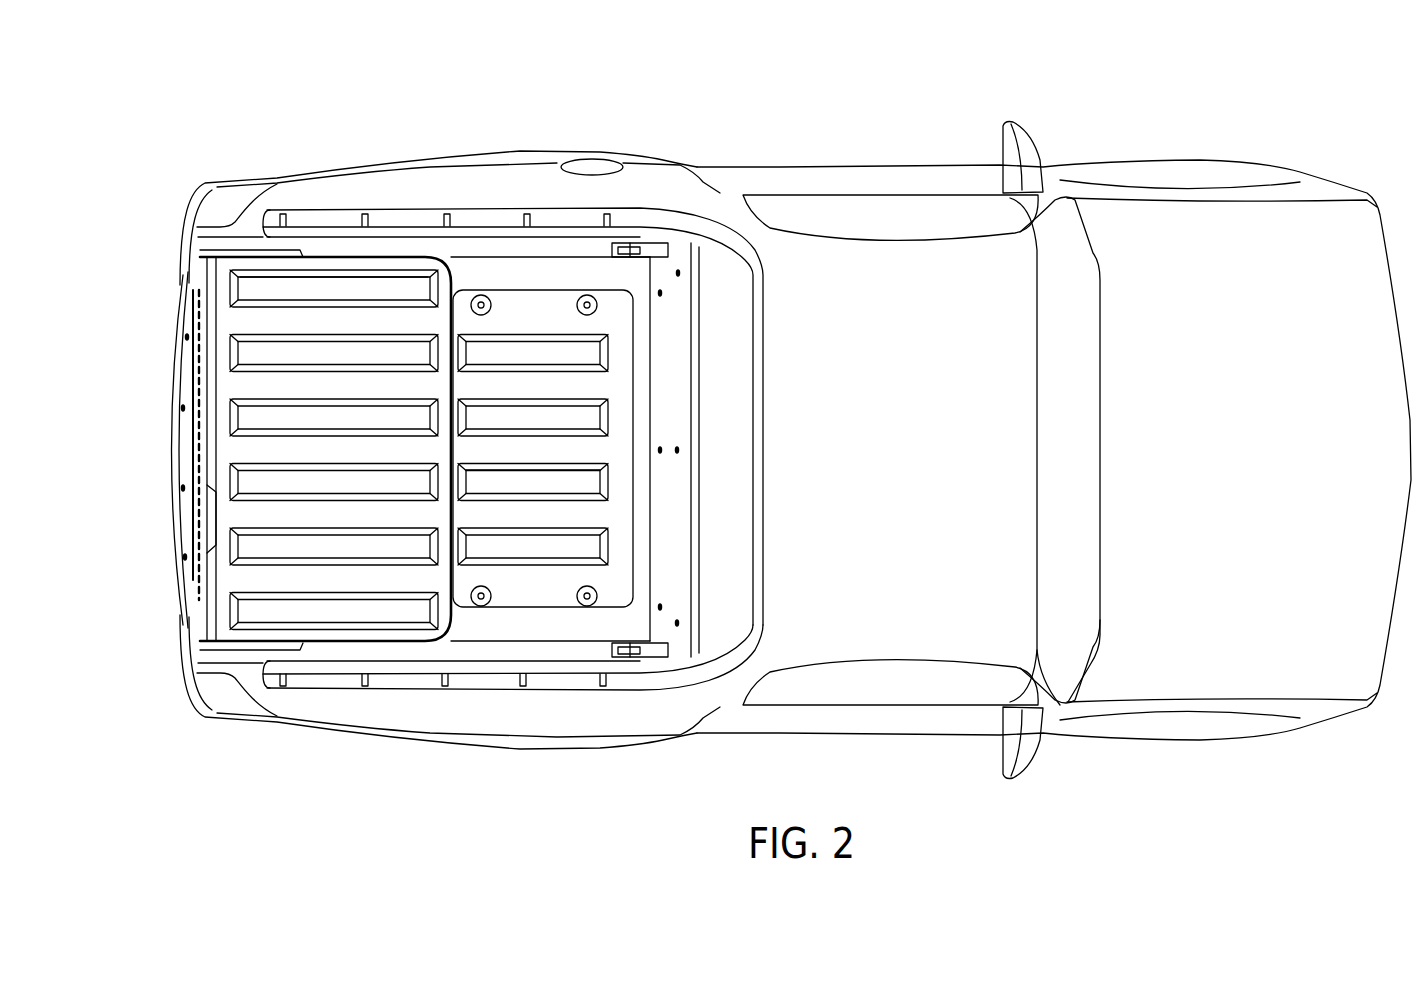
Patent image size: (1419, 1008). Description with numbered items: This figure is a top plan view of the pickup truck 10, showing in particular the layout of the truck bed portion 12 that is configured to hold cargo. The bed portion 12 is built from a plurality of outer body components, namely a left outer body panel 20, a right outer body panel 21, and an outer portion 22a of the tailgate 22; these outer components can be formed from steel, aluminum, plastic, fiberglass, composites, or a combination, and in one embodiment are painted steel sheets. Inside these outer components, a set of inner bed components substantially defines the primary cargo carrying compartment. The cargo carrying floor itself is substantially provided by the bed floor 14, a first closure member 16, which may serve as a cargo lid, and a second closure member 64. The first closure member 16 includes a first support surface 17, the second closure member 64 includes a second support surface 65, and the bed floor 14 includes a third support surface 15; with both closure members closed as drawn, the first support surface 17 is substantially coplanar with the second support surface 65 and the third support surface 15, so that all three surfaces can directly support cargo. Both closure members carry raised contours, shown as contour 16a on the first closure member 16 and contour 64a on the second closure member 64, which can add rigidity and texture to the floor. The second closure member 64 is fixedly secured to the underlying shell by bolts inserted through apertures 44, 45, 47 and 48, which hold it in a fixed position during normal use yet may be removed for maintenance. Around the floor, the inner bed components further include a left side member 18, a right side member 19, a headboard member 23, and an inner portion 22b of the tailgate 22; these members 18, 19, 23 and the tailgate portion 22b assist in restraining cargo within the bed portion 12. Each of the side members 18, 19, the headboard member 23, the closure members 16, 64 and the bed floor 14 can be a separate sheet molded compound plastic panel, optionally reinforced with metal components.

The pickup truck 10 is at (1098, 120).
The truck bed portion 12 is at (598, 120).
The bed floor 14 is at (562, 637).
The third support surface 15 is at (548, 640).
The first closure member 16 is at (216, 577).
The raised contour 16a is at (345, 350).
The first support surface 17 is at (334, 461).
The left side member 18 is at (530, 248).
The right side member 19 is at (520, 665).
The left outer body panel 20 is at (457, 190).
The right outer body panel 21 is at (452, 718).
The tailgate 22 is at (152, 524).
The tailgate outer portion 22a is at (168, 362).
The tailgate inner portion 22b is at (208, 345).
The headboard member 23 is at (670, 578).
The aperture 44 is at (587, 295).
The aperture 45 is at (482, 295).
The aperture 47 is at (587, 606).
The aperture 48 is at (481, 606).
The second closure member 64 is at (592, 512).
The raised contour 64a is at (502, 352).
The second support surface 65 is at (560, 460).